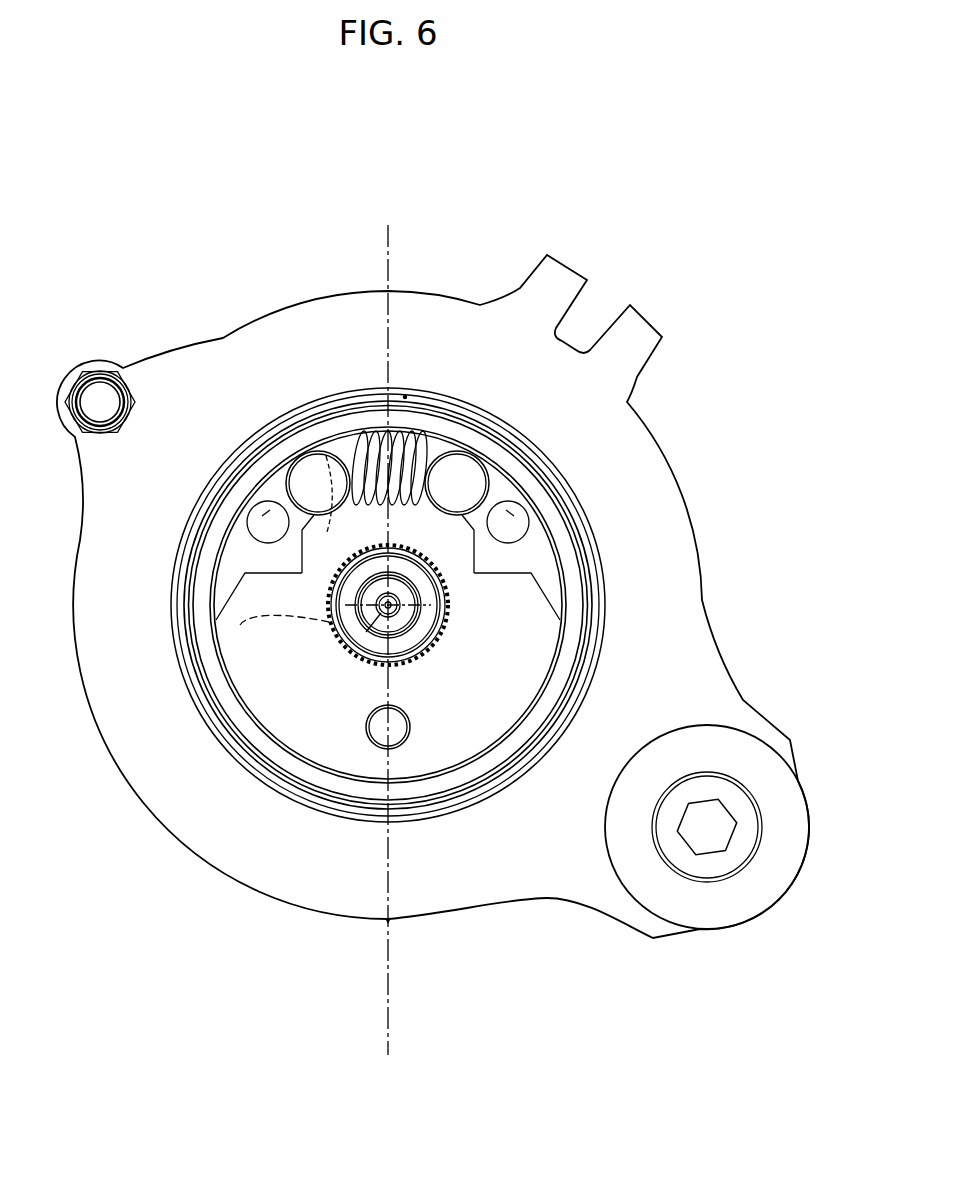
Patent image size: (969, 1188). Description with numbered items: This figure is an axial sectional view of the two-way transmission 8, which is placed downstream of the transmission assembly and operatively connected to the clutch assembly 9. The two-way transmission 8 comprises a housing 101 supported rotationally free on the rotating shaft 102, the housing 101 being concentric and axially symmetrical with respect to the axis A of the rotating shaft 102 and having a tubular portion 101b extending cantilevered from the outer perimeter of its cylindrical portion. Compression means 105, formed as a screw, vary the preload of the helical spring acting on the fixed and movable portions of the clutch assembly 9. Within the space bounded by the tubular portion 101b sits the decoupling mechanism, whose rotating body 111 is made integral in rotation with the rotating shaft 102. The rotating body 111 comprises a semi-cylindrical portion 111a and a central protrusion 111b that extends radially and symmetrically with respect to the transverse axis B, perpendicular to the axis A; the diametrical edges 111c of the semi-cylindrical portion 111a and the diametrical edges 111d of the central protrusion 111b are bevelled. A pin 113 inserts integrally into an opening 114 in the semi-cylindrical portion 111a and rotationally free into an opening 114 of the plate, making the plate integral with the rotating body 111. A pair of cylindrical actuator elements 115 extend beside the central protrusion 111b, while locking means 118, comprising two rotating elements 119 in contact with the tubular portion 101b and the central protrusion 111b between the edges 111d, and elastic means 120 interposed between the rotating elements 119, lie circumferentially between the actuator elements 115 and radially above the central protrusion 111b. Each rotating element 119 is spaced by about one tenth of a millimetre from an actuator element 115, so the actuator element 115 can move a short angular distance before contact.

The two-way transmission 8 is at (663, 286).
The clutch assembly 9 is at (700, 530).
The housing 101 is at (318, 819).
The tubular portion 101b is at (477, 430).
The rotating shaft 102 is at (427, 628).
The compression means 105 is at (714, 872).
The rotating body 111 is at (233, 712).
The semi-cylindrical portion 111a is at (523, 668).
The central protrusion 111b is at (300, 534).
The diametrical edges 111c is at (232, 587).
The diametrical edges 111d is at (290, 523).
The pin 113 is at (396, 722).
The opening 114 is at (408, 735).
The actuator elements 115 is at (250, 512).
The locking means 118 is at (405, 396).
The rotating elements 119 is at (316, 442).
The elastic means 120 is at (350, 442).
The axis A is at (240, 625).
The transverse axis B is at (388, 990).